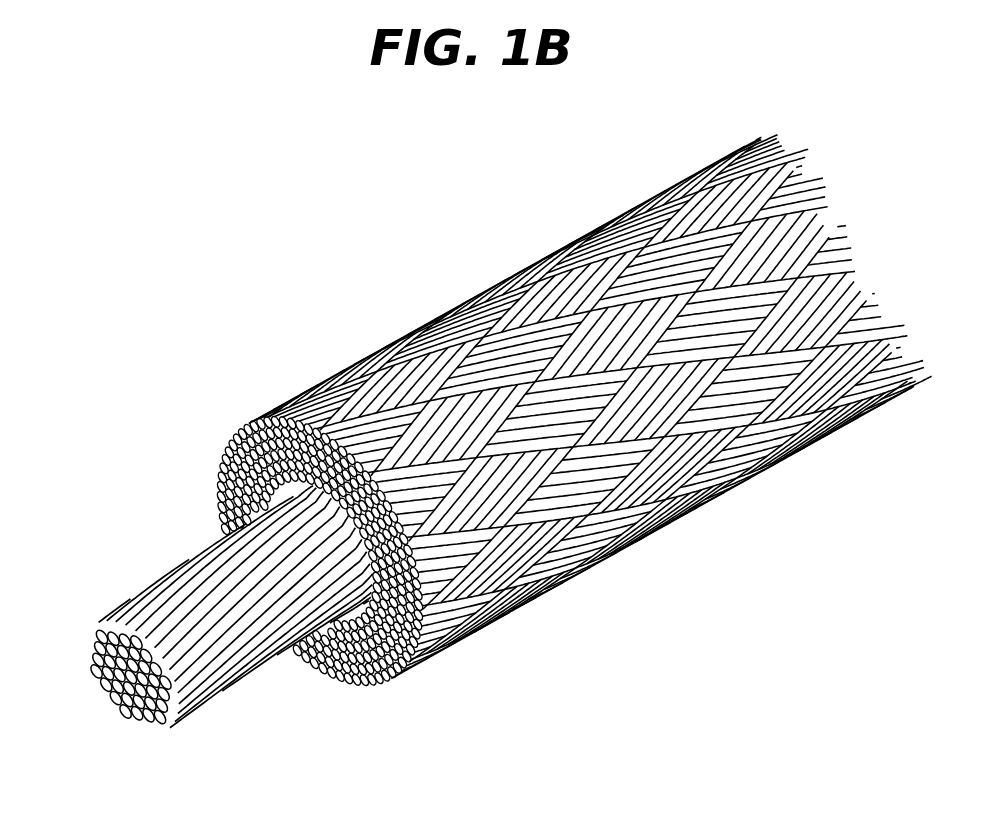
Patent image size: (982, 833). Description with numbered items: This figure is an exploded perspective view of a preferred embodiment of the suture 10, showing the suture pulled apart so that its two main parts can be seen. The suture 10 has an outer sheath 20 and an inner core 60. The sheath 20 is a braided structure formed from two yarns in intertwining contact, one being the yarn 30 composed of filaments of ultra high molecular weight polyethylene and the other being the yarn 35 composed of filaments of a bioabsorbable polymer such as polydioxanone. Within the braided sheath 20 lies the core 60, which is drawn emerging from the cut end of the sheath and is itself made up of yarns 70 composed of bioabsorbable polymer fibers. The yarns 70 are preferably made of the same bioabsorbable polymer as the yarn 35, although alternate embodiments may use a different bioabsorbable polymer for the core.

The suture 10 is at (385, 226).
The outer sheath 20 is at (299, 398).
The yarn 30 is at (597, 352).
The yarn 35 is at (482, 343).
The inner core 60 is at (160, 574).
The yarns 70 is at (117, 637).